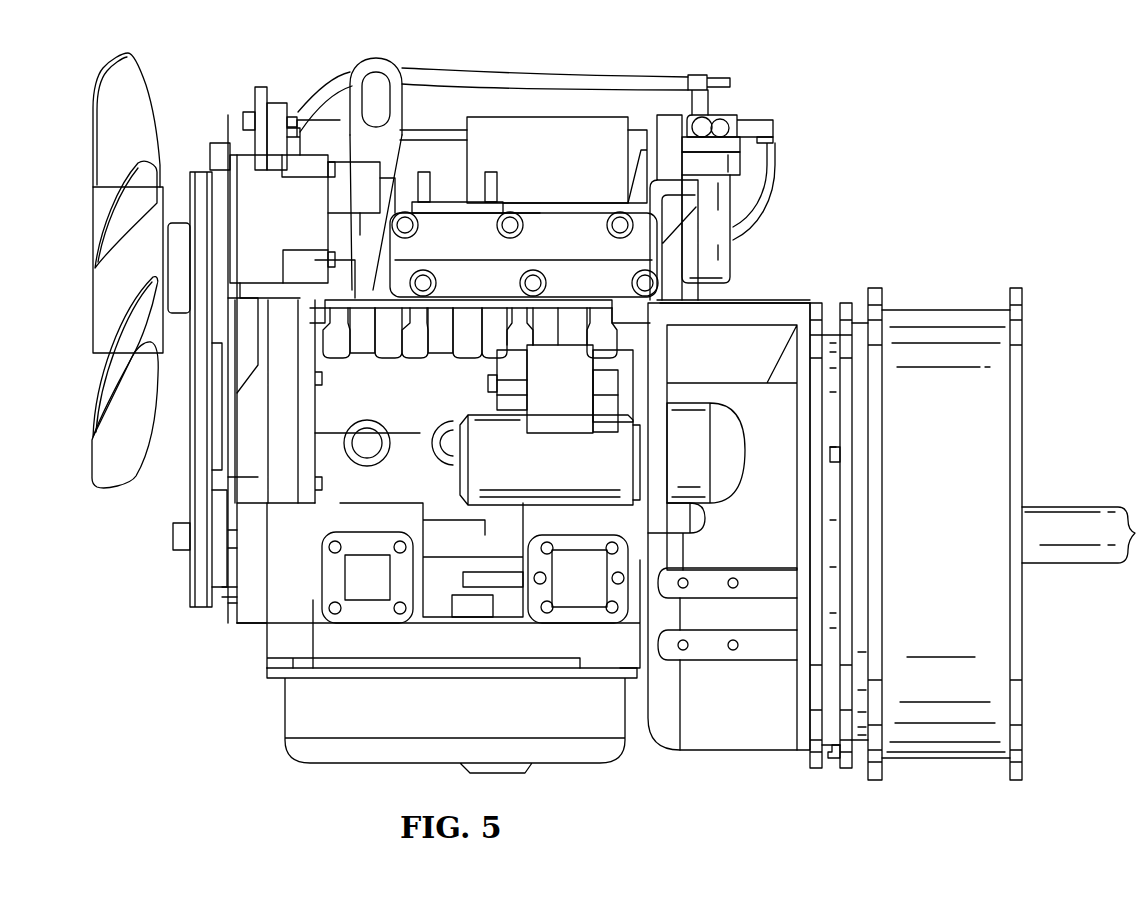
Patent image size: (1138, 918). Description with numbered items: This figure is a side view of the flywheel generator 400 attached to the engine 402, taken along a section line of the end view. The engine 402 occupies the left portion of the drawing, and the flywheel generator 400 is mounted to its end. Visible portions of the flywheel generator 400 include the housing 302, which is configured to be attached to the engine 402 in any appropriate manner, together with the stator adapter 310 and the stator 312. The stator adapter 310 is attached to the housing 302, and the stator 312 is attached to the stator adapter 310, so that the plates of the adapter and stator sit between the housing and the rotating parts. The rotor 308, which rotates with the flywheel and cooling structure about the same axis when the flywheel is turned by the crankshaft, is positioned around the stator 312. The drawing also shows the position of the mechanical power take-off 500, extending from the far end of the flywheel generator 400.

The flywheel generator 400 is at (880, 263).
The engine 402 is at (273, 680).
The housing 302 is at (727, 750).
The rotor 308 is at (945, 758).
The stator adapter 310 is at (814, 770).
The stator 312 is at (853, 770).
The mechanical power take-off 500 is at (1075, 506).